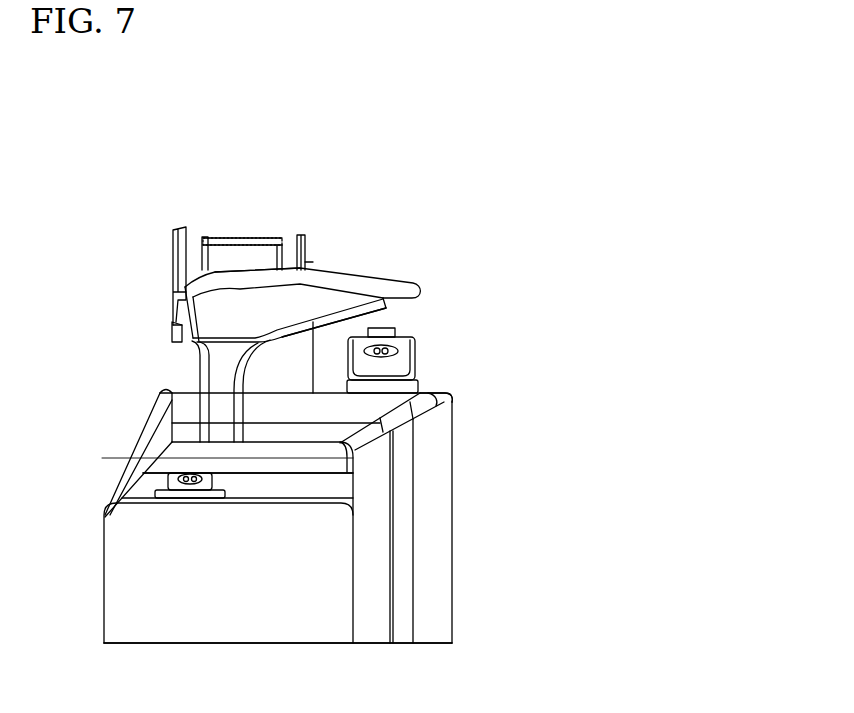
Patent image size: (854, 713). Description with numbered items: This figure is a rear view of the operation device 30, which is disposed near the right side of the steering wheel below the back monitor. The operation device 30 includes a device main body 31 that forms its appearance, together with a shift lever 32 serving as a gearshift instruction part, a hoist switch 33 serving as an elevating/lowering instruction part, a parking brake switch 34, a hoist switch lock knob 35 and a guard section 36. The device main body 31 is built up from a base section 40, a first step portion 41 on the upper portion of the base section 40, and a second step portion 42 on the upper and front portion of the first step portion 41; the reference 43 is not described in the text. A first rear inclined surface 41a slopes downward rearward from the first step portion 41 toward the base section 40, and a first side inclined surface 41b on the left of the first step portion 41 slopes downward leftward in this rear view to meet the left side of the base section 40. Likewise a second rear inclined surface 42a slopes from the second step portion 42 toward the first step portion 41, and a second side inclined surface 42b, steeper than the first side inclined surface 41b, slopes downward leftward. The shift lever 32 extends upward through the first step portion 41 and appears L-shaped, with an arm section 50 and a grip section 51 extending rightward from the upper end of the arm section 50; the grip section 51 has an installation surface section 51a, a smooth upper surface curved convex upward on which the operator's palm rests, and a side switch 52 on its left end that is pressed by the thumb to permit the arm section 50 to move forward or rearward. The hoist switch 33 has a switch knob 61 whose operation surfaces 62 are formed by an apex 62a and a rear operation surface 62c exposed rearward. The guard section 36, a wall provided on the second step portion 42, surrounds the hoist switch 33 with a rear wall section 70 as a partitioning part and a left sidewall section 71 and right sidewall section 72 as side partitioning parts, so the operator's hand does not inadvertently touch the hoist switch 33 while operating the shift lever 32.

The operation device 30 is at (545, 152).
The device main body 31 is at (421, 646).
The shift lever 32 is at (358, 280).
The hoist switch 33 is at (208, 242).
The parking brake switch 34 is at (181, 472).
The hoist switch lock knob 35 is at (385, 352).
The guard section 36 is at (312, 244).
The base section 40 is at (120, 568).
The first step portion 41 is at (300, 442).
The first rear inclined surface 41a is at (270, 470).
The first side inclined surface 41b is at (135, 470).
The second step portion 42 is at (187, 388).
The second rear inclined surface 42a is at (372, 407).
The second side inclined surface 42b is at (145, 422).
The side wall 43 is at (451, 557).
The arm section 50 is at (230, 312).
The grip section 51 is at (218, 317).
The installation surface section 51a is at (268, 255).
The side switch 52 is at (174, 318).
The switch knob 61 is at (196, 258).
The operation surfaces 62 is at (244, 202).
The apex 62a is at (246, 248).
The rear operation surface 62c is at (232, 260).
The rear wall section 70 is at (277, 365).
The left sidewall section 71 is at (177, 270).
The right sidewall section 72 is at (313, 262).